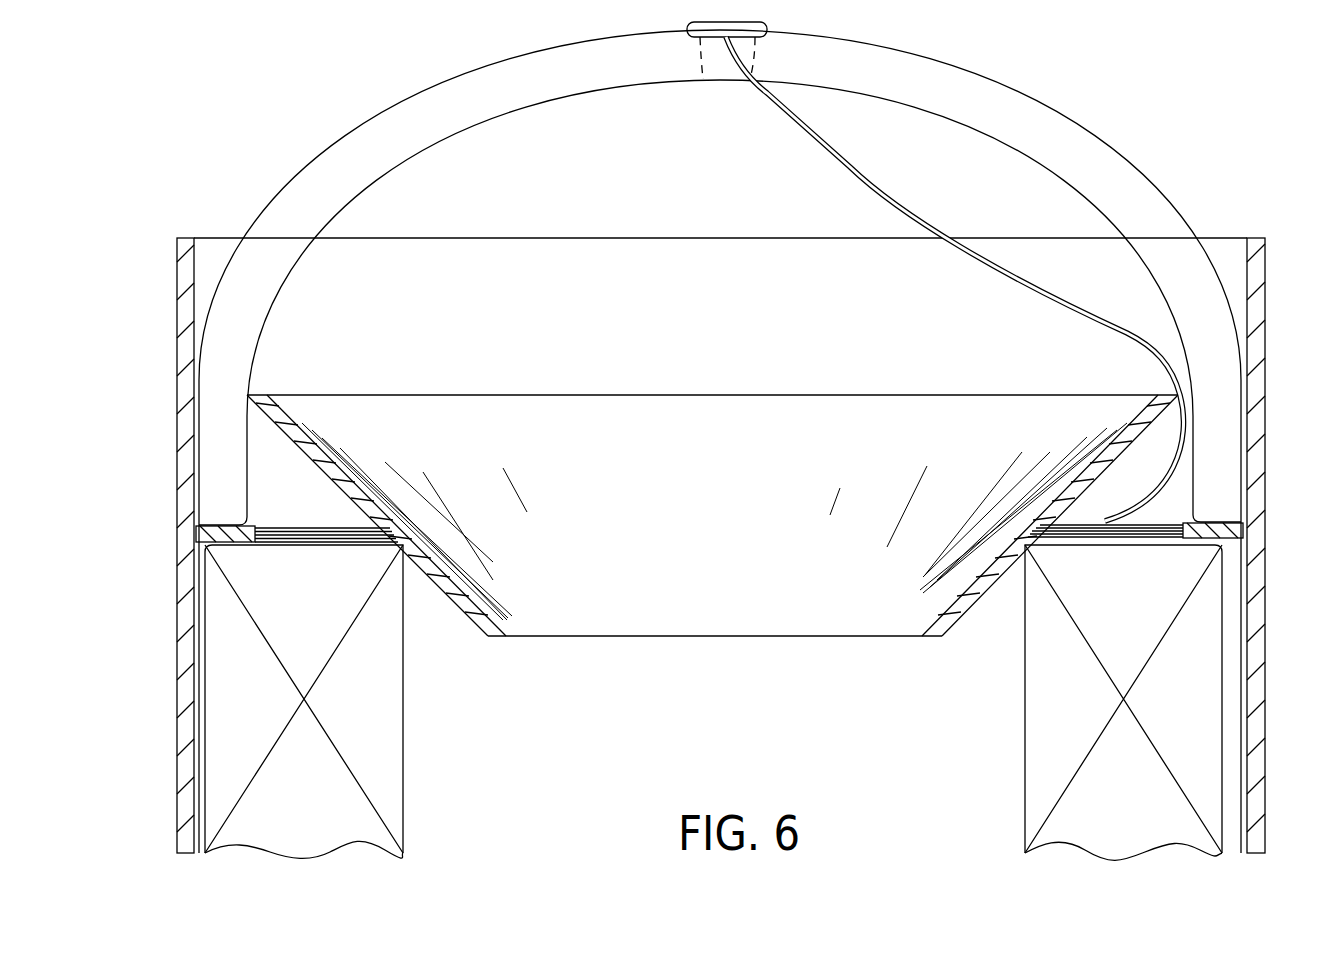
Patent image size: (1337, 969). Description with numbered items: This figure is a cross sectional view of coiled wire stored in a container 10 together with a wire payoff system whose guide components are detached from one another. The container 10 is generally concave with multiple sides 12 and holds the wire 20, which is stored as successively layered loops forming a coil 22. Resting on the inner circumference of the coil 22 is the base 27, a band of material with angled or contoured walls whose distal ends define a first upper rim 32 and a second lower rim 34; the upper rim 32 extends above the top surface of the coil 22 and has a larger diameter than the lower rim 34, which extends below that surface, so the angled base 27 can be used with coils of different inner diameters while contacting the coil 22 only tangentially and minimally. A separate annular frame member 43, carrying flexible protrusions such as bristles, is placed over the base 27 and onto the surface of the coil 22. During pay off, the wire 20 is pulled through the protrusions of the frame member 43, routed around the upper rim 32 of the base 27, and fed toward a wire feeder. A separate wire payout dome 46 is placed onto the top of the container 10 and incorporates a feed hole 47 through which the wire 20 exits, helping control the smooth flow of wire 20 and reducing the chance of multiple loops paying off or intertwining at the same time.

The container 10 is at (1262, 253).
The sides 12 is at (411, 306).
The wire 20 is at (895, 198).
The coil 22 is at (385, 748).
The base 27 is at (682, 410).
The first upper rim 32 is at (262, 388).
The second lower rim 34 is at (854, 645).
The frame member 43 is at (199, 535).
The wire payout dome 46 is at (1105, 162).
The feed hole 47 is at (711, 90).